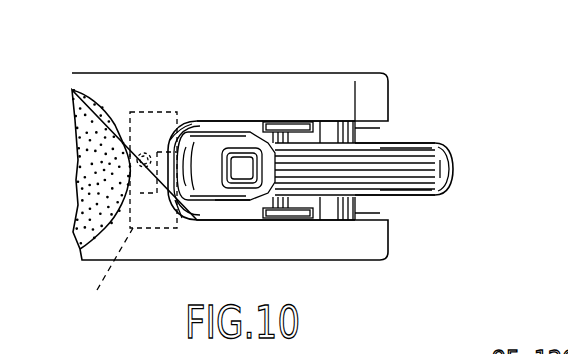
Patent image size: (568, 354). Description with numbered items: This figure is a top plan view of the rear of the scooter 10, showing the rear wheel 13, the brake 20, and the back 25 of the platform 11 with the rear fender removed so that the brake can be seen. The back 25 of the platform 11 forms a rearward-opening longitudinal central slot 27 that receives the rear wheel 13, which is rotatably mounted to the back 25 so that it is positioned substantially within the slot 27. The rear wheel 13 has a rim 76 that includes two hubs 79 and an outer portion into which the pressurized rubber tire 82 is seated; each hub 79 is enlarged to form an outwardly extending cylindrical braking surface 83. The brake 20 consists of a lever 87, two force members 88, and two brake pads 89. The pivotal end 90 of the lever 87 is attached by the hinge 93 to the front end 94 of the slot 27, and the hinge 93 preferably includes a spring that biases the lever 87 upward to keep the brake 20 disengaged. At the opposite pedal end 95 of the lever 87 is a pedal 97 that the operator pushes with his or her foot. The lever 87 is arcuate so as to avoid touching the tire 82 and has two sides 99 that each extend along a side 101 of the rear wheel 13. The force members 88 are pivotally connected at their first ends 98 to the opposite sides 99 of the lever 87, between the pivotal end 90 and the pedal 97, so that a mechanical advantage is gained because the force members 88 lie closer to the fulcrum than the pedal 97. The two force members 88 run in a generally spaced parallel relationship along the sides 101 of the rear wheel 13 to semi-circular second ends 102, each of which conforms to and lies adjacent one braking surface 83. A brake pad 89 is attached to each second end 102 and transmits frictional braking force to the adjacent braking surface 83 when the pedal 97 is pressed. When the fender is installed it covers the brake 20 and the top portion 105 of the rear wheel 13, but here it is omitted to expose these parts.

The scooter 10 is at (148, 266).
The platform 11 is at (90, 260).
The rear wheel 13 is at (448, 148).
The brake 20 is at (250, 207).
The back 25 is at (317, 261).
The longitudinal central slot 27 is at (232, 221).
The rim 76 is at (357, 133).
The hubs 79 is at (350, 121).
The pressurized rubber tire 82 is at (455, 180).
The cylindrical braking surface 83 is at (355, 132).
The lever 87 is at (192, 125).
The force members 88 is at (265, 124).
The brake pads 89 is at (335, 125).
The pivotal end 90 is at (160, 204).
The hinge 93 is at (107, 271).
The front end 94 is at (182, 227).
The pedal end 95 is at (240, 147).
The pedal 97 is at (230, 150).
The first ends 98 is at (200, 121).
The sides 99 is at (226, 166).
The sides 101 is at (413, 143).
The second ends 102 is at (300, 124).
The top portion 105 is at (356, 160).